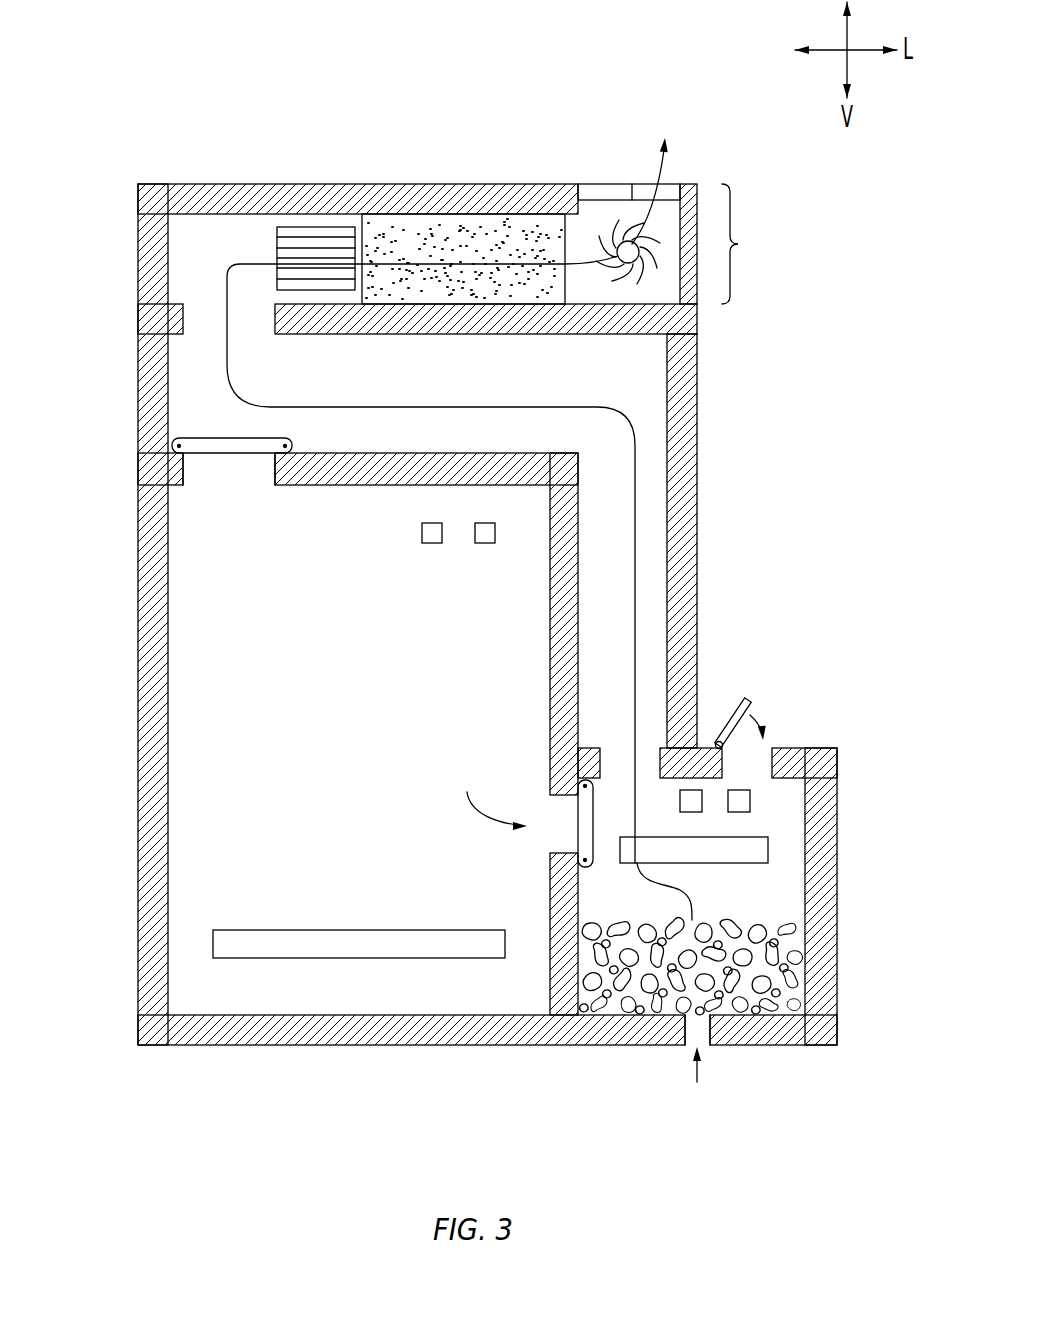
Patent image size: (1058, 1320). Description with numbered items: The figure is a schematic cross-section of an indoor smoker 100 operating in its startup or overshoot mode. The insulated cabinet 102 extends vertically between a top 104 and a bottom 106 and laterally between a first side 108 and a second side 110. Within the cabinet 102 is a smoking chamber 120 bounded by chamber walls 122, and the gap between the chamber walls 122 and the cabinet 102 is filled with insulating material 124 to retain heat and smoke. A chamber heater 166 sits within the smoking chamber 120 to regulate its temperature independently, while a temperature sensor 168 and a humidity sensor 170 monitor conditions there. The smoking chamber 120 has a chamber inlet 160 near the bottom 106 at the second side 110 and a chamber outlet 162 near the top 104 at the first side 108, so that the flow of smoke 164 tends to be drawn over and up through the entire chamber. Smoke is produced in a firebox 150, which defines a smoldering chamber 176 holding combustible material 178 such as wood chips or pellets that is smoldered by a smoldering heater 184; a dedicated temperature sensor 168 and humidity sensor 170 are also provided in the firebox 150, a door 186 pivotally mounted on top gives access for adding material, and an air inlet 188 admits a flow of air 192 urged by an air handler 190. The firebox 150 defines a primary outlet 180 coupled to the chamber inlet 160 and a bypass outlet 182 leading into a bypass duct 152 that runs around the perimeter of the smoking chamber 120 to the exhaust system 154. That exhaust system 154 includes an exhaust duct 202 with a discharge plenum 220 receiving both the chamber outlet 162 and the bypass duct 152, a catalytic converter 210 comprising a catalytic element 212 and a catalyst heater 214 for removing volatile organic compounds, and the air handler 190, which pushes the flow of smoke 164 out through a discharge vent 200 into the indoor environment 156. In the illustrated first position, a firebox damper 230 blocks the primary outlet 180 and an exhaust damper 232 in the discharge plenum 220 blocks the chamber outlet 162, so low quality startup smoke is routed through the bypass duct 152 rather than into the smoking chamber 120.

The indoor smoker 100 is at (433, 549).
The cabinet 102 is at (433, 605).
The top 104 is at (494, 170).
The bottom 106 is at (188, 1052).
The first side 108 is at (99, 614).
The second side 110 is at (705, 457).
The smoking chamber 120 is at (374, 766).
The chamber walls 122 is at (224, 1015).
The insulating material 124 is at (153, 883).
The firebox 150 is at (680, 873).
The bypass duct 152 is at (579, 380).
The exhaust system 154 is at (680, 210).
The indoor environment 156 is at (652, 110).
The chamber inlet 160 is at (488, 792).
The chamber outlet 162 is at (244, 468).
The flow of smoke 164 is at (456, 406).
The chamber heater 166 is at (327, 958).
The temperature sensor 168 is at (432, 543).
The humidity sensor 170 is at (485, 543).
The smoldering chamber 176 is at (778, 810).
The combustible material 178 is at (757, 940).
The primary outlet 180 is at (556, 834).
The bypass outlet 182 is at (615, 745).
The smoldering heater 184 is at (770, 850).
The door 186 is at (748, 698).
The air inlet 188 is at (683, 1053).
The air handler 190 is at (636, 260).
The flow of air 192 is at (697, 1068).
The discharge vent 200 is at (646, 174).
The exhaust duct 202 is at (319, 213).
The catalytic converter 210 is at (453, 198).
The catalytic element 212 is at (530, 232).
The catalyst heater 214 is at (303, 240).
The discharge plenum 220 is at (180, 390).
The firebox damper 230 is at (587, 816).
The exhaust damper 232 is at (214, 456).